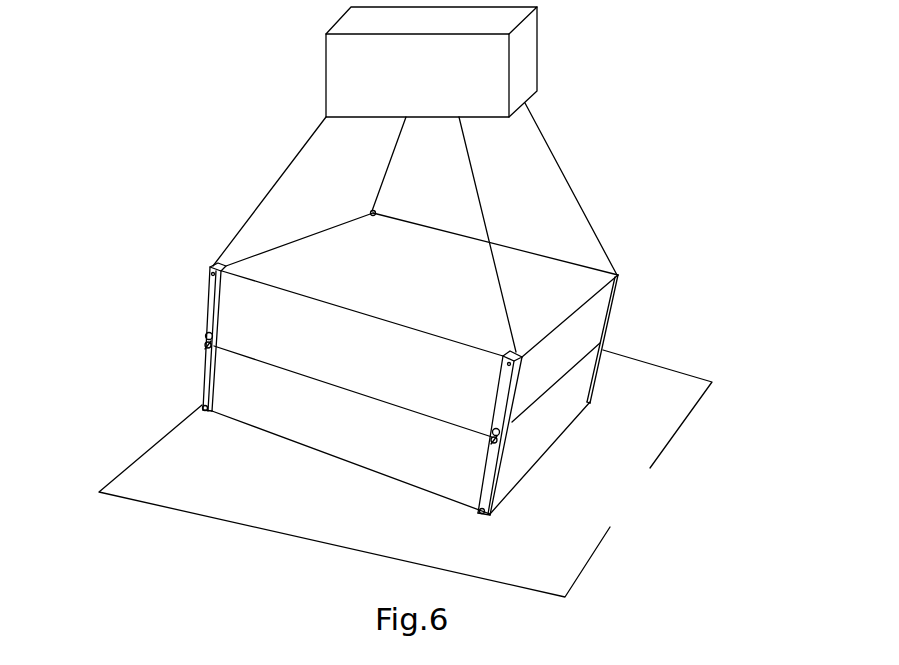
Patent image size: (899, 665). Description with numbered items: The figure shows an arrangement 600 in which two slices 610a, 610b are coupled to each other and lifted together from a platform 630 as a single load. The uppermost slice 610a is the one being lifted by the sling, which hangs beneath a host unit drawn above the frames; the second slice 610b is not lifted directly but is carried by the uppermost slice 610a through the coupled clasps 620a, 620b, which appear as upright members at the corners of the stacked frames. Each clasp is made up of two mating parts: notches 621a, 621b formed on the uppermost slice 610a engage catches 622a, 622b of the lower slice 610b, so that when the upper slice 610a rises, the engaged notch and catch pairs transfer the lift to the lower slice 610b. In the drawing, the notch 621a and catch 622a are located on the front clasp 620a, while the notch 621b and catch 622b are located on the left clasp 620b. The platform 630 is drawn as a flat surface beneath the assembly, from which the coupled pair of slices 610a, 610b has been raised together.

The system 600 is at (662, 270).
The uppermost slice 610a is at (345, 223).
The second slice 610b is at (325, 450).
The clasp 620a is at (632, 440).
The clasp 620b is at (115, 305).
The notch 621a is at (503, 430).
The notch 621b is at (207, 335).
The catch 622a is at (497, 441).
The catch 622b is at (207, 347).
The platform 630 is at (208, 503).